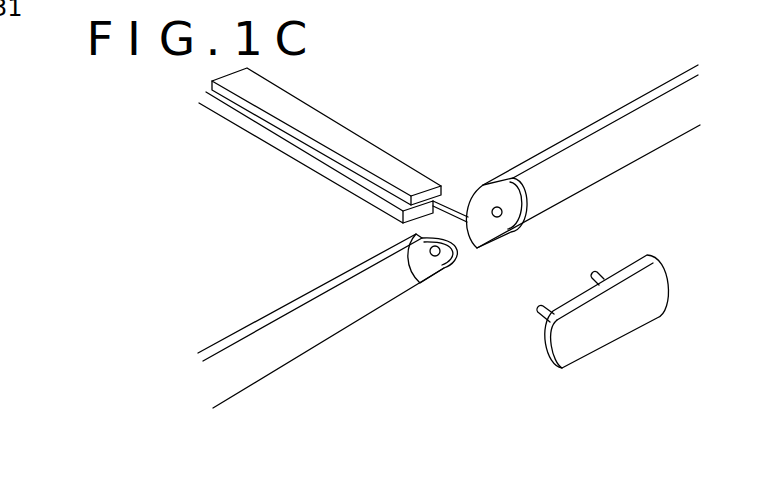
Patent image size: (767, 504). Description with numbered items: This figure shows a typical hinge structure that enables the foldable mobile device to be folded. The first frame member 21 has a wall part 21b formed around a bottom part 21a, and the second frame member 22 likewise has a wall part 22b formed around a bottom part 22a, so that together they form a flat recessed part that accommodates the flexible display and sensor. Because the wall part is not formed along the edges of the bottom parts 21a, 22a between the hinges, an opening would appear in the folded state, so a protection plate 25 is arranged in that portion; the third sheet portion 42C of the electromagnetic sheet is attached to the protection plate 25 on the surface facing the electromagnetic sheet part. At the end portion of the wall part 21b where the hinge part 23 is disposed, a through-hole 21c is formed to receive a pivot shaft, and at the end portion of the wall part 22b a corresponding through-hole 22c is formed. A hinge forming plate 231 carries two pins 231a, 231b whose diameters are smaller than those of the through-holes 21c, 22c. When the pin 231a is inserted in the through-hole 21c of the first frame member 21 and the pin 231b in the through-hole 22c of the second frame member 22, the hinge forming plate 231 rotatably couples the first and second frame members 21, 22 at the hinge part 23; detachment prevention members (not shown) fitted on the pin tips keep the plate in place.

The first frame member 21 is at (274, 341).
The bottom part 21a is at (225, 233).
The wall part 21b is at (366, 323).
The through-hole 21c is at (437, 257).
The second frame member 22 is at (568, 125).
The bottom part 22a is at (478, 103).
The wall part 22b is at (621, 174).
The through-hole 22c is at (498, 206).
The hinge part 23 is at (615, 298).
The hinge forming plate 231 is at (624, 324).
The pin 231a is at (539, 310).
The pin 231b is at (595, 275).
The protection plate 25 is at (331, 178).
The third sheet portion 42C is at (362, 142).